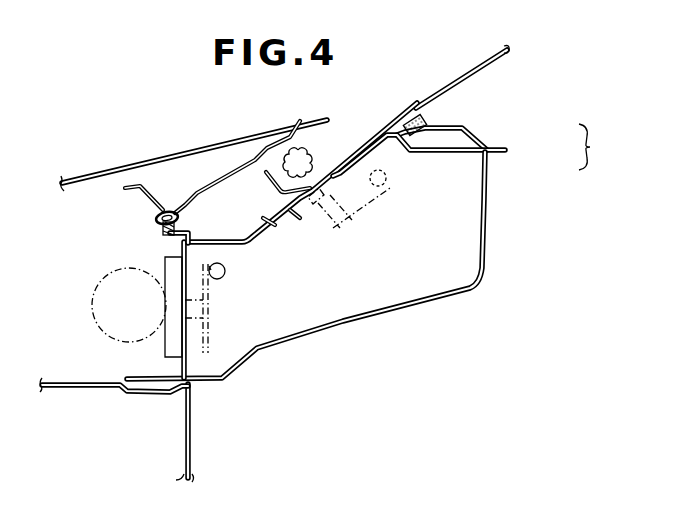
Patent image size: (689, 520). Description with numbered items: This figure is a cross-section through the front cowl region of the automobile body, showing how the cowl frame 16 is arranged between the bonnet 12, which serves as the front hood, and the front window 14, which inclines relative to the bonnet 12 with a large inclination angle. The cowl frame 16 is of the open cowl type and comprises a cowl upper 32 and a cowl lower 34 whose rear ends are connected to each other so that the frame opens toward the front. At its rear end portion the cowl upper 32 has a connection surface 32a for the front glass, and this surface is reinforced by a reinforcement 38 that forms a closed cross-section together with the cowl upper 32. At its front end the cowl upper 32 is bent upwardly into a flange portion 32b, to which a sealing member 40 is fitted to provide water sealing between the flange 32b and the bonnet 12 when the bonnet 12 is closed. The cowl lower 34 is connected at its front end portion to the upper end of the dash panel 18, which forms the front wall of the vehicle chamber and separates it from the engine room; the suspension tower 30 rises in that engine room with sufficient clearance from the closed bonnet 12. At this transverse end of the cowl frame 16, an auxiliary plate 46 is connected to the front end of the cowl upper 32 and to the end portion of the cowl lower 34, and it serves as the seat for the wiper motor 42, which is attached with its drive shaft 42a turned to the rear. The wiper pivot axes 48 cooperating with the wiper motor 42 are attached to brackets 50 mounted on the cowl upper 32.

The bonnet 12 is at (140, 162).
The front window 14 is at (465, 78).
The cowl frame 16 is at (599, 147).
The dash panel 18 is at (183, 452).
The suspension tower 30 is at (82, 388).
The cowl upper 32 is at (467, 130).
The connection surface 32a is at (437, 129).
The flange portion 32b is at (163, 236).
The cowl lower 34 is at (487, 190).
The reinforcement 38 is at (437, 158).
The sealing member 40 is at (157, 219).
The wiper motor 42 is at (100, 327).
The drive shaft 42a is at (197, 312).
The auxiliary plate 46 is at (182, 364).
The wiper pivot axes 48 is at (322, 222).
The brackets 50 is at (303, 202).